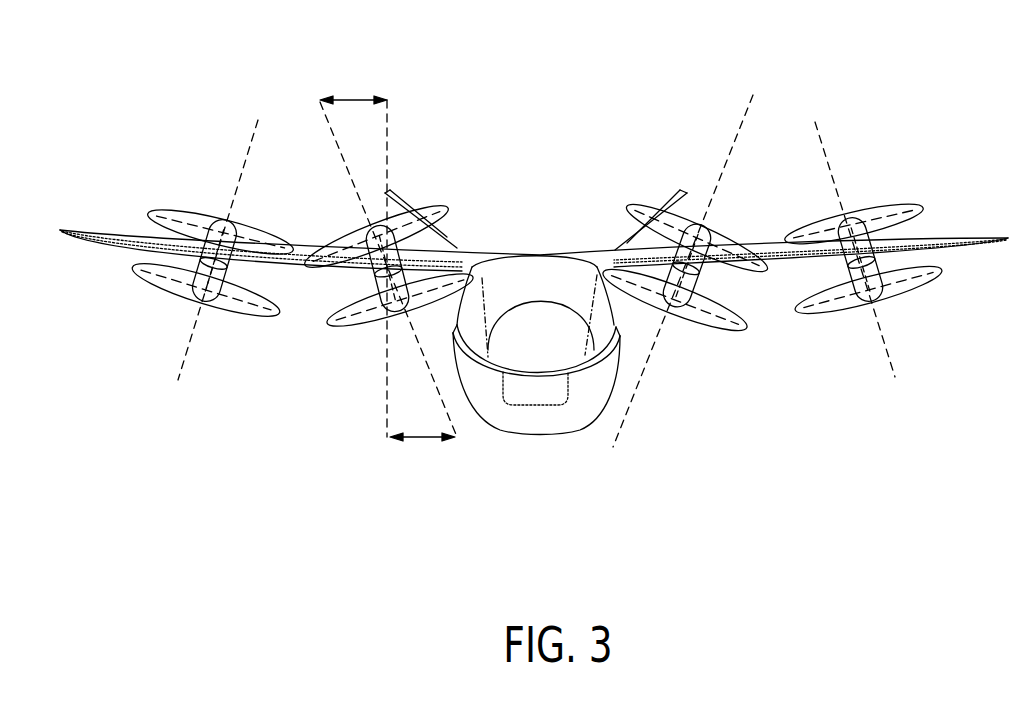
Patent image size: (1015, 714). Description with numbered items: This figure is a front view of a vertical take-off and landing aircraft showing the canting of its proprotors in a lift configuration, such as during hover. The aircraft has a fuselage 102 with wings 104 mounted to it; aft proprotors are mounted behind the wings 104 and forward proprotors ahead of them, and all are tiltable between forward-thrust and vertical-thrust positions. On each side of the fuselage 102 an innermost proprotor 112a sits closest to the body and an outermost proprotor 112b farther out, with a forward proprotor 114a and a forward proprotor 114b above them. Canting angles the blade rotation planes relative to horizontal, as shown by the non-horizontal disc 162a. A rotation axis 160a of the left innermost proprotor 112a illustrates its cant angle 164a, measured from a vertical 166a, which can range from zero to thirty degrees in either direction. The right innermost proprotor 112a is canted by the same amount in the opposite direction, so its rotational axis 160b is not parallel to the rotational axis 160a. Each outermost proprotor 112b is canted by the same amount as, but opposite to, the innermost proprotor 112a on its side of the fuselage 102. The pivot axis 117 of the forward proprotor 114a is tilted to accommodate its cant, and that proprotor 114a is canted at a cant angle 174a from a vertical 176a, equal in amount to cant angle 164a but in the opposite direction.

The fuselage 102 is at (567, 435).
The wings 104 is at (537, 253).
The innermost proprotor 112a is at (392, 313).
The outermost proprotor 112b is at (203, 305).
The left proprotor 114a is at (363, 227).
The proprotor 114b is at (217, 218).
The pivot axis 117 is at (455, 225).
The rotation axis 160a is at (458, 435).
The rotational axis 160b is at (652, 362).
The disc 162a is at (360, 325).
The cant angle 164a is at (420, 440).
The vertical 166a is at (385, 393).
The cant angle 174a is at (357, 100).
The vertical 176a is at (390, 152).